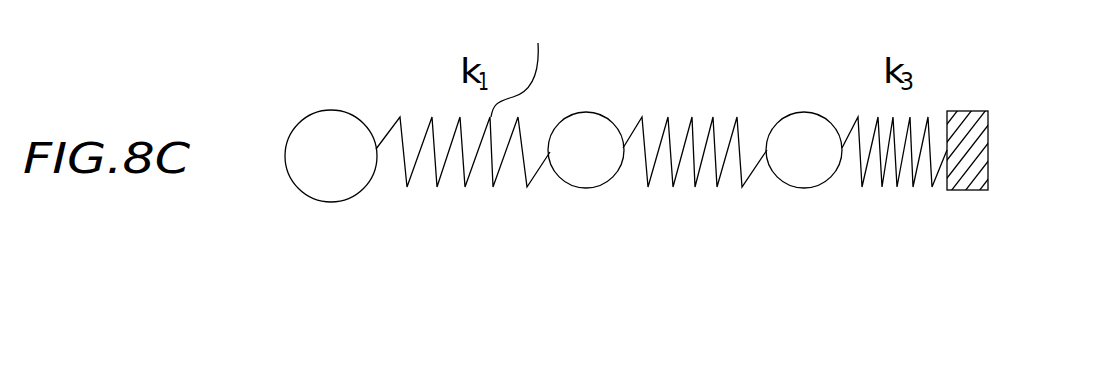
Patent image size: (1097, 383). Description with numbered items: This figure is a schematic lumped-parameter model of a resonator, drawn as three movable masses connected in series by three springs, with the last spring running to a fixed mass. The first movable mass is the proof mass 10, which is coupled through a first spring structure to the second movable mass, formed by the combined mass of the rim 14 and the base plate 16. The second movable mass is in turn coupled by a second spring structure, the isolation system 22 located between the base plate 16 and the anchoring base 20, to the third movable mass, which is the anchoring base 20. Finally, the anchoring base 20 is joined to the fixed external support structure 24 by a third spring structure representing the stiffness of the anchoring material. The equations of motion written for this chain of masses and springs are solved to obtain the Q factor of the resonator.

The proof mass 10 is at (333, 202).
The rim 14 is at (635, 195).
The base plate 16 is at (595, 190).
The isolation system 22 is at (717, 187).
The anchoring base 20 is at (817, 188).
The fixed external support structure 24 is at (968, 190).